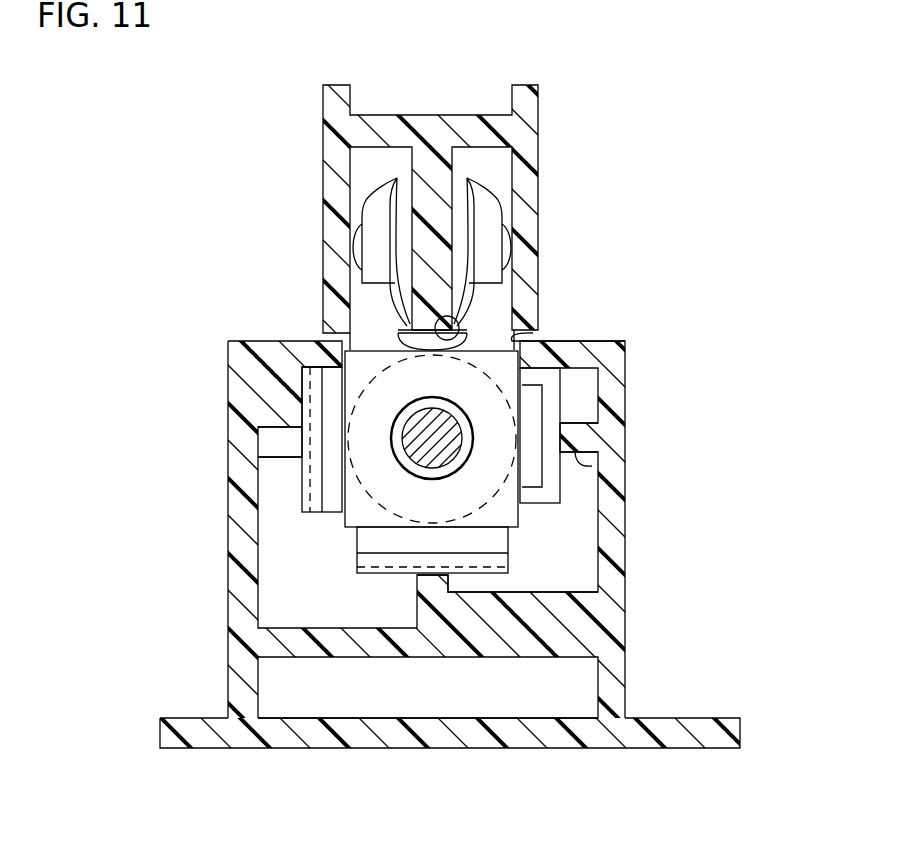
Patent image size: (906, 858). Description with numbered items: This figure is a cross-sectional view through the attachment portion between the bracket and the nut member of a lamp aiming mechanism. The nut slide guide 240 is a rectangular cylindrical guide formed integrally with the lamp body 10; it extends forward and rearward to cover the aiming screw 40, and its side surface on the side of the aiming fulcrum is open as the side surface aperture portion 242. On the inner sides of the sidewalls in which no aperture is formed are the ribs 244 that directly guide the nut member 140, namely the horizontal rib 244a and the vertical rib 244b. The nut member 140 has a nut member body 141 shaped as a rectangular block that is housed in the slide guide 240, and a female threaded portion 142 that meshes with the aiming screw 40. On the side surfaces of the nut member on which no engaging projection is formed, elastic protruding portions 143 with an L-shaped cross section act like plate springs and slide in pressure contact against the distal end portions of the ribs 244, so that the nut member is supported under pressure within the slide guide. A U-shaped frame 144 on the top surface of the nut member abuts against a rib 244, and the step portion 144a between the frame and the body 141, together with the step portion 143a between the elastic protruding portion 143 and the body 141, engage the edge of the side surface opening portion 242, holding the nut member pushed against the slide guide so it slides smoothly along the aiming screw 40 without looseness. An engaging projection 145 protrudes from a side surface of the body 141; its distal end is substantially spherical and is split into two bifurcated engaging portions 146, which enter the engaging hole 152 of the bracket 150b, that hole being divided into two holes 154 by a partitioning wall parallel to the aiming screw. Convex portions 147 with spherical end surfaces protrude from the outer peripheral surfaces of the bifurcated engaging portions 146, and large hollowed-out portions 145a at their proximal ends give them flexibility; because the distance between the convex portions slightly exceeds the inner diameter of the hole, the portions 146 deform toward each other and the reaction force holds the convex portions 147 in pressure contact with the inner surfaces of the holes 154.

The lamp body 10 is at (248, 758).
The aiming screw 40 is at (467, 467).
The nut member 140 is at (305, 321).
The nut member body 141 is at (384, 341).
The female threaded portion 142 is at (402, 426).
The elastic protruding portion 143 is at (327, 508).
The step portion 143a is at (340, 352).
The U-shaped frame 144 is at (560, 395).
The step portion 144a is at (540, 360).
The engaging projection 145 is at (360, 191).
The hollowed-out portion 145a is at (440, 314).
The bifurcated engaging portion 146 is at (386, 188).
The convex portion 147 is at (354, 246).
The bracket 150b is at (543, 150).
The engaging hole 152 is at (423, 214).
The hole 154 is at (360, 162).
The nut slide guide 240 is at (453, 420).
The side surface aperture portion 242 is at (537, 333).
The rib 244 is at (453, 420).
The horizontal rib 244a is at (620, 462).
The vertical rib 244b is at (525, 593).